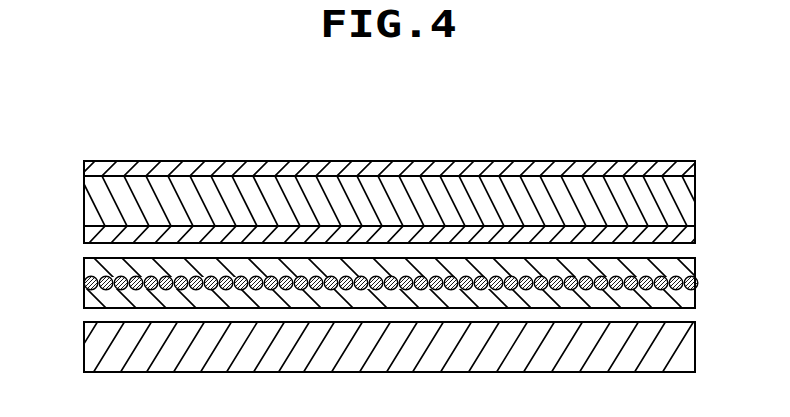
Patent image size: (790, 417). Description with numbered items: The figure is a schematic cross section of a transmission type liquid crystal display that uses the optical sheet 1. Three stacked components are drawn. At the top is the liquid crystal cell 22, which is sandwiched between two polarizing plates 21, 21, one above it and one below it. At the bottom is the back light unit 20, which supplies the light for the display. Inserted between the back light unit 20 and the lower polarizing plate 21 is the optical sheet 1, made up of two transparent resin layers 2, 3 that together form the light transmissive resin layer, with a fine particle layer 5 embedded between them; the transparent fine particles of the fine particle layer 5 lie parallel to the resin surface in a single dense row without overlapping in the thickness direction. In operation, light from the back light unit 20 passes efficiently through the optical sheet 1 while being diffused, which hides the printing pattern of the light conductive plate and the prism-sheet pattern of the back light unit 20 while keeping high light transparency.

The optical sheet 1 is at (380, 284).
The transparent resin layer 2 is at (688, 268).
The transparent resin layer 3 is at (688, 300).
The fine particle layer 5 is at (694, 281).
The back light unit 20 is at (98, 345).
The polarizing plate 21 is at (97, 169).
The liquid crystal cell 22 is at (97, 203).